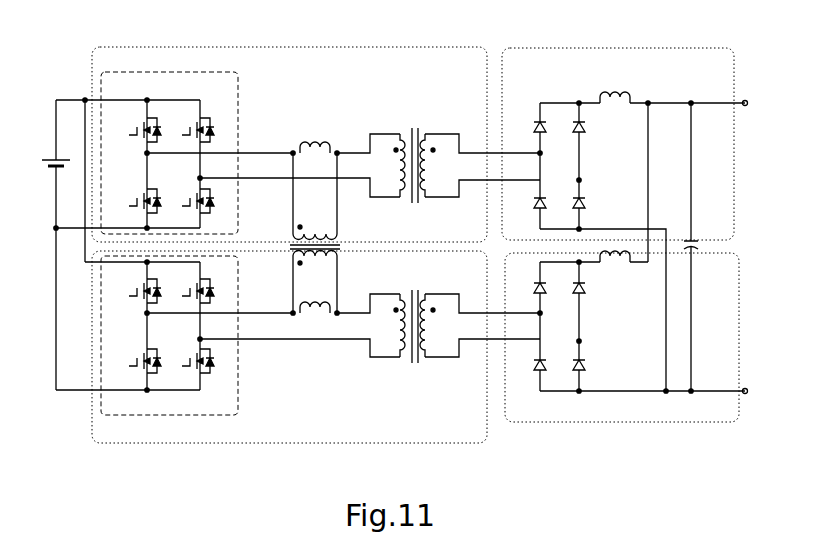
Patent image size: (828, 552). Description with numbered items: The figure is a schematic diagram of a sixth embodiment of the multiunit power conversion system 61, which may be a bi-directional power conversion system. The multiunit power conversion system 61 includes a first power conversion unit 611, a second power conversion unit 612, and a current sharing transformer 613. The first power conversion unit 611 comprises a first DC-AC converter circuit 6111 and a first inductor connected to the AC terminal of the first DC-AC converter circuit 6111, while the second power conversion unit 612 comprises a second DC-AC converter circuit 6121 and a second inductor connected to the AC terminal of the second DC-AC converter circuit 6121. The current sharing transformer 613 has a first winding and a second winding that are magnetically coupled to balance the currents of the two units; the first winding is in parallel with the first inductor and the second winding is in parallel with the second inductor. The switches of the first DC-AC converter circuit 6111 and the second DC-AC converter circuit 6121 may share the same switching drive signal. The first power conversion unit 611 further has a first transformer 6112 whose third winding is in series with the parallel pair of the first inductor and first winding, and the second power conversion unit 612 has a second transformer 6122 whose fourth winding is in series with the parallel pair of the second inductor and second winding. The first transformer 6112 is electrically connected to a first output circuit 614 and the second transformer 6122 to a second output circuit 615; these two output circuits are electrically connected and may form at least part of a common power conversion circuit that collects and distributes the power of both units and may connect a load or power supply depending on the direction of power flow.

The multiunit power conversion system 61 is at (158, 41).
The first power conversion unit 611 is at (292, 129).
The first DC-AC converter circuit 6111 is at (100, 76).
The first transformer 6112 is at (418, 127).
The second power conversion unit 612 is at (297, 362).
The second DC-AC converter circuit 6121 is at (101, 413).
The second transformer 6122 is at (412, 363).
The current sharing transformer 613 is at (290, 247).
The first output circuit 614 is at (625, 219).
The second output circuit 615 is at (626, 336).